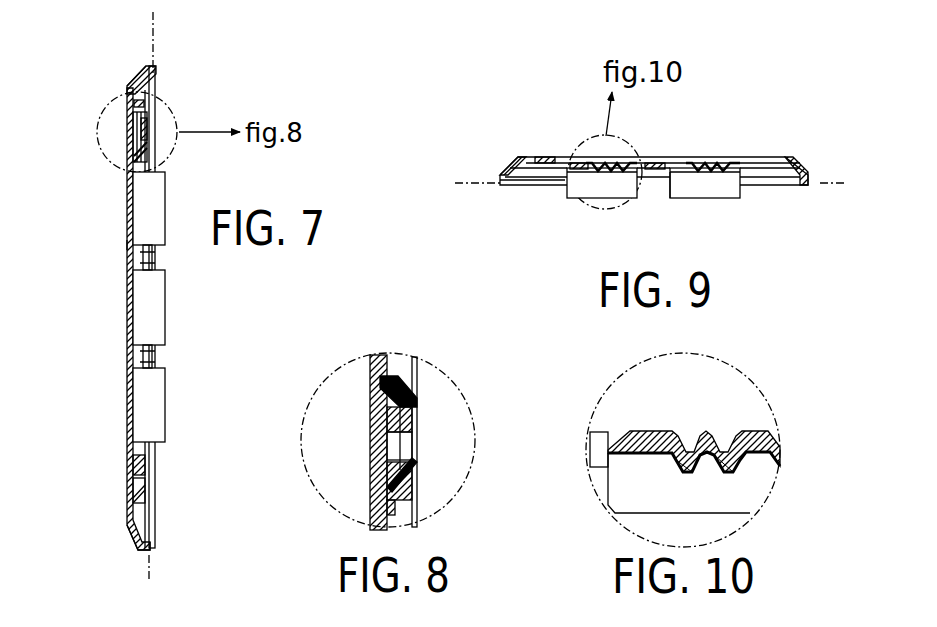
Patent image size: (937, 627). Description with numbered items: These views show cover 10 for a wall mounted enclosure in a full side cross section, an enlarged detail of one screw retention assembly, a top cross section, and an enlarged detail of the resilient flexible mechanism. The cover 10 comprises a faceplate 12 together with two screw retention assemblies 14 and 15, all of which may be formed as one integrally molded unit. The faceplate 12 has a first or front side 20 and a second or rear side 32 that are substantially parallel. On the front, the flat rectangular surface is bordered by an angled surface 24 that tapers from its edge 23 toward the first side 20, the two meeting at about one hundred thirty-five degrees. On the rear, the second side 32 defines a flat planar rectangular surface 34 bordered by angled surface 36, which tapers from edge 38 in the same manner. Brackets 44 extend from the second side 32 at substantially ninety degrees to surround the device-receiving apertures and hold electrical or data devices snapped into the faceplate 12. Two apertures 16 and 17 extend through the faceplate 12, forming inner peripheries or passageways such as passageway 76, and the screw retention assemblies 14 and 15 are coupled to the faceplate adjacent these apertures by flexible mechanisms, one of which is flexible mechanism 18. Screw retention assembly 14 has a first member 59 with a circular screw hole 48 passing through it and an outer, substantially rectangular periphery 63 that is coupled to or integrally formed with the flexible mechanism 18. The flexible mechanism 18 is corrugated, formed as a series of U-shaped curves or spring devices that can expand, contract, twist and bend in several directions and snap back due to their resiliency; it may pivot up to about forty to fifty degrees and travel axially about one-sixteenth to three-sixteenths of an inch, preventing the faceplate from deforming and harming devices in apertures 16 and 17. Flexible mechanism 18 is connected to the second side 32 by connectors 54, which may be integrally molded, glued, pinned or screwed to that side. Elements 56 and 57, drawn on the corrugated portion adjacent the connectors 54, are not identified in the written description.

In FIG. 7, the cover 10 is at (108, 378).
In FIG. 9, the cover 10 is at (752, 132).
In FIG. 7, the faceplate 12 is at (122, 318).
In FIG. 9, the faceplate 12 is at (508, 165).
In FIG. 7, the screw retention assembly 14 is at (130, 142).
In FIG. 9, the screw retention assembly 14 is at (680, 180).
In FIG. 8, the screw retention assembly 14 is at (385, 466).
In FIG. 7, the screw retention assembly 15 is at (130, 488).
In FIG. 7, the aperture 16 is at (124, 128).
In FIG. 8, the aperture 16 is at (380, 432).
In FIG. 7, the aperture 17 is at (130, 473).
In FIG. 9, the flexible mechanism 18 is at (598, 183).
In FIG. 7, the first side 20 is at (128, 245).
In FIG. 9, the first side 20 is at (548, 158).
In FIG. 7, the edge 23 is at (145, 68).
In FIG. 7, the angled surface 24 is at (128, 86).
In FIG. 7, the second side 32 is at (153, 258).
In FIG. 9, the second side 32 is at (530, 178).
In FIG. 7, the rectangular surface 34 is at (153, 355).
In FIG. 7, the angled surface 36 is at (155, 91).
In FIG. 7, the edge 38 is at (155, 77).
In FIG. 7, the brackets 44 is at (168, 183).
In FIG. 9, the brackets 44 is at (642, 200).
In FIG. 10, the brackets 44 is at (705, 513).
In FIG. 8, the screw hole 48 is at (417, 452).
In FIG. 9, the connectors 54 is at (577, 163).
In FIG. 10, the connectors 54 is at (625, 443).
In FIG. 9, the groove 56 is at (600, 165).
In FIG. 10, the groove 56 is at (722, 462).
In FIG. 9, the tooth 57 is at (696, 163).
In FIG. 8, the first member 59 is at (417, 405).
In FIG. 8, the outer periphery 63 is at (403, 396).
In FIG. 7, the inner periphery 76 is at (133, 116).
In FIG. 8, the inner periphery 76 is at (372, 412).